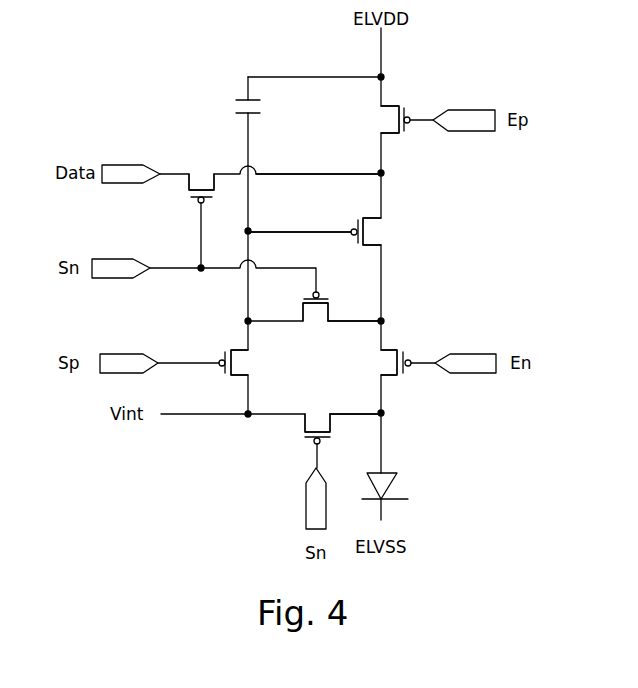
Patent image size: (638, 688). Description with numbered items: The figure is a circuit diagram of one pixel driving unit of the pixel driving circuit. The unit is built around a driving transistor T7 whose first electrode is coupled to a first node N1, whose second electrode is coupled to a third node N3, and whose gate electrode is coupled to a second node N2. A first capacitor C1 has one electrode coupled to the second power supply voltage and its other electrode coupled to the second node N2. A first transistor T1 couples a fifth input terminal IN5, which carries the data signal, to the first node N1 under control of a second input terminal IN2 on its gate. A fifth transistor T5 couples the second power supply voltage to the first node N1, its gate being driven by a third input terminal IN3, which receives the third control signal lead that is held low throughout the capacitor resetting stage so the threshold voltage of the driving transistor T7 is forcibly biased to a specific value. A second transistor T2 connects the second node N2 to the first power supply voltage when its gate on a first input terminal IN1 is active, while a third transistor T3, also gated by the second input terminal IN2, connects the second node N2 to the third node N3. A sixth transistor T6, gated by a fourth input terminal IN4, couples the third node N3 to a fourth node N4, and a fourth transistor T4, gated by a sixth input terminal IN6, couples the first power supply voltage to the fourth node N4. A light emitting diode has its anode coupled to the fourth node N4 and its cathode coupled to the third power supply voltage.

The first capacitor C1 is at (266, 107).
The first transistor T1 is at (201, 204).
The second transistor T2 is at (246, 362).
The third transistor T3 is at (316, 321).
The fourth transistor T4 is at (320, 430).
The fifth transistor T5 is at (377, 119).
The sixth transistor T6 is at (386, 362).
The driving transistor T7 is at (382, 231).
The first node N1 is at (336, 173).
The second node N2 is at (299, 218).
The third node N3 is at (371, 311).
The fourth node N4 is at (377, 420).
The first input terminal IN1 is at (129, 363).
The second input terminal IN2 is at (121, 268).
The third input terminal IN3 is at (464, 120).
The fourth input terminal IN4 is at (465, 363).
The fifth input terminal IN5 is at (131, 174).
The sixth input terminal IN6 is at (316, 498).